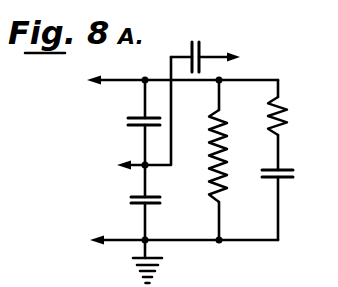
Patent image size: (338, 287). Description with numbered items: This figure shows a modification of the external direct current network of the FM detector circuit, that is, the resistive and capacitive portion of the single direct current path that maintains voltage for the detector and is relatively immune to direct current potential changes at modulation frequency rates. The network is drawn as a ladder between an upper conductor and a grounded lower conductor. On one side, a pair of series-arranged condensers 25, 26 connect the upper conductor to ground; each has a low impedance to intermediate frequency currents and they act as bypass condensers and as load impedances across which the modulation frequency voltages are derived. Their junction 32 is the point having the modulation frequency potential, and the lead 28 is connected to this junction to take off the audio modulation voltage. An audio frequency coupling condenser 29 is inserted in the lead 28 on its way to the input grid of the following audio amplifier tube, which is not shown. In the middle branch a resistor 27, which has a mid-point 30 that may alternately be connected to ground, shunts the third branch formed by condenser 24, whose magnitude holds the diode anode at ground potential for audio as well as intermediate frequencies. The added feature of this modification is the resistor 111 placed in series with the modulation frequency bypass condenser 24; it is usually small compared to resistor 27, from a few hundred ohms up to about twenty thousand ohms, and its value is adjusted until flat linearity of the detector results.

The condenser 24 is at (293, 171).
The condenser 25 is at (128, 118).
The condenser 26 is at (131, 199).
The resistor 27 is at (224, 126).
The lead 28 is at (169, 78).
The audio frequency coupling condenser 29 is at (200, 43).
The mid-point of resistor 30 is at (207, 160).
The junction of condensers 32 is at (142, 163).
The resistor 111 is at (283, 130).